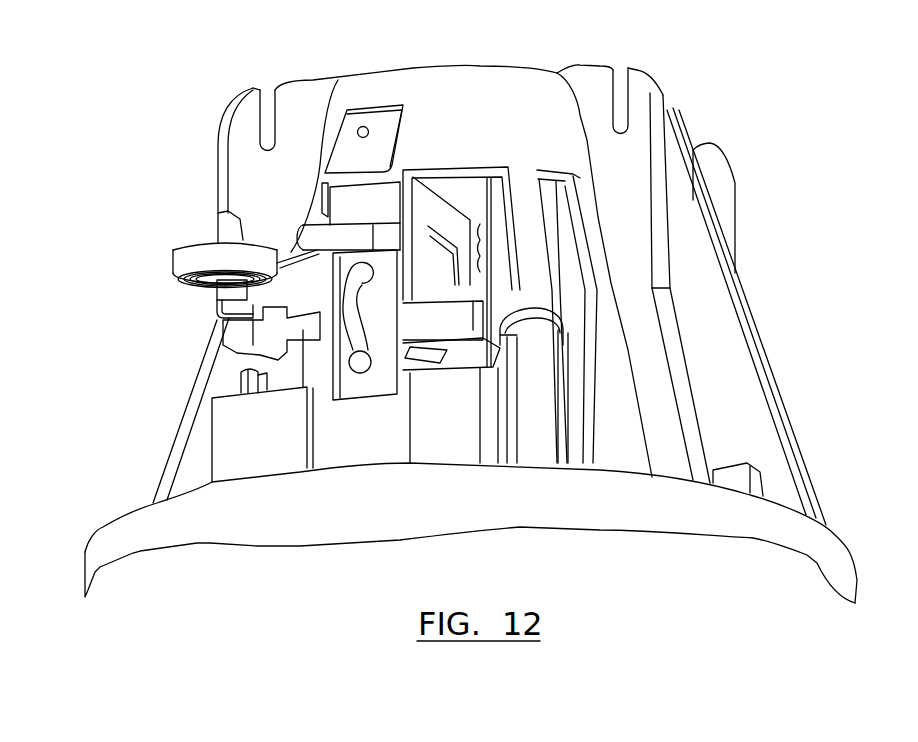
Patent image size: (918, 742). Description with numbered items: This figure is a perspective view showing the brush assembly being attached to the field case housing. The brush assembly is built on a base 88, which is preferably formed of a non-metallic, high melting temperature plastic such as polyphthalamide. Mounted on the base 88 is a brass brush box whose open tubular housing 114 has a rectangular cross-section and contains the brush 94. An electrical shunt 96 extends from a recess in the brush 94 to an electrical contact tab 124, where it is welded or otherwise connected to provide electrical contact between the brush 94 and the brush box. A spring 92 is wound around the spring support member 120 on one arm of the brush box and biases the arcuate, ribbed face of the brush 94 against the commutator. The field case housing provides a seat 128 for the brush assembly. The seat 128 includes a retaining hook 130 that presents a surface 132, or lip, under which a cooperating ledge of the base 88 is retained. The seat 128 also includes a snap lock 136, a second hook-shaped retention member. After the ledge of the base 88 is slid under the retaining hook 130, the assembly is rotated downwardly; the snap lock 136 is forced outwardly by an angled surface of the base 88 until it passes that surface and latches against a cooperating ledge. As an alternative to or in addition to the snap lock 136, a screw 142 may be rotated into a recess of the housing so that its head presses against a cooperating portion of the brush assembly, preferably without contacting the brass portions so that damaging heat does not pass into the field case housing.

The base 88 is at (225, 333).
The spring 92 is at (187, 243).
The brush 94 is at (390, 237).
The electrical shunt 96 is at (345, 274).
The tubular housing 114 is at (440, 218).
The spring support member 120 is at (222, 296).
The electrical contact tab 124 is at (368, 380).
The seat 128 is at (223, 467).
The retaining hook 130 is at (242, 375).
The surface 132 is at (173, 443).
The snap lock 136 is at (503, 350).
The screw 142 is at (505, 320).